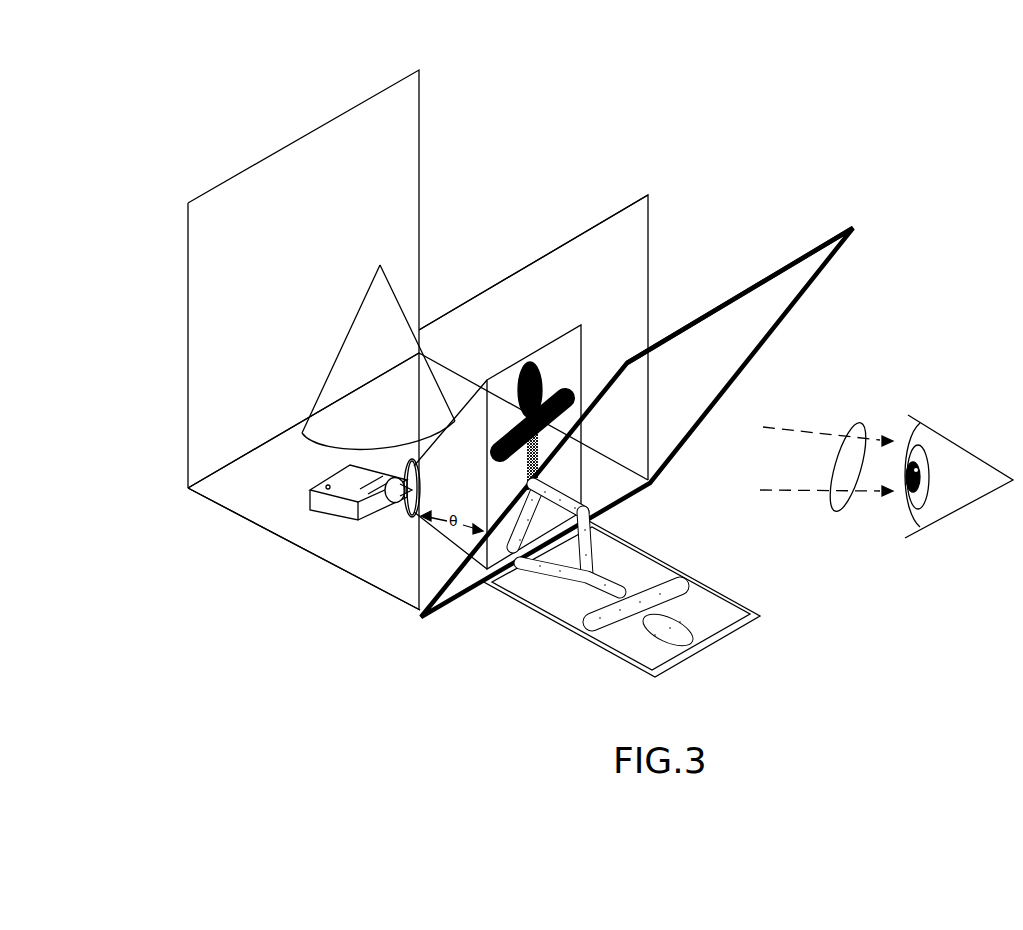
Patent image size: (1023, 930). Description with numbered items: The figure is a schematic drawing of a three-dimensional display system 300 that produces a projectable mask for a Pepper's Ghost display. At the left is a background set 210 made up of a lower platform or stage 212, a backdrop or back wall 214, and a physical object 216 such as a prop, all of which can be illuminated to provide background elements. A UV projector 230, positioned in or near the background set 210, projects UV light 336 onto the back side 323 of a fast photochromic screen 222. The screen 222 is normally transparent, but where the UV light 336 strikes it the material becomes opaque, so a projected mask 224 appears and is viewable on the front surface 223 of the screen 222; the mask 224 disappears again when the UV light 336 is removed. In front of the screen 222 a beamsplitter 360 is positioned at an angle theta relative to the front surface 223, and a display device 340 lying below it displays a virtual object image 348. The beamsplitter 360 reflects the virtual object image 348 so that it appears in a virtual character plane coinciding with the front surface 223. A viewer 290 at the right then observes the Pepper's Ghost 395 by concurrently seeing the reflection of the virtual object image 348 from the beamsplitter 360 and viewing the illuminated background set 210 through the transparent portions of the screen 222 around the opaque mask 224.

The 3D display system 300 is at (181, 184).
The background set 210 is at (240, 566).
The stage 212 is at (308, 556).
The back wall 214 is at (188, 352).
The physical object 216 is at (322, 392).
The UV projector 230 is at (363, 545).
The UV light 336 is at (412, 516).
The front surface 223 is at (640, 275).
The back side 323 is at (519, 268).
The projected mask 224 is at (581, 385).
The projectable mask screen 222 is at (417, 600).
The beamsplitter 360 is at (853, 228).
The display device 340 is at (608, 667).
The virtual object image 348 is at (700, 587).
The Pepper's Ghost 395 is at (834, 512).
The viewer 290 is at (975, 455).